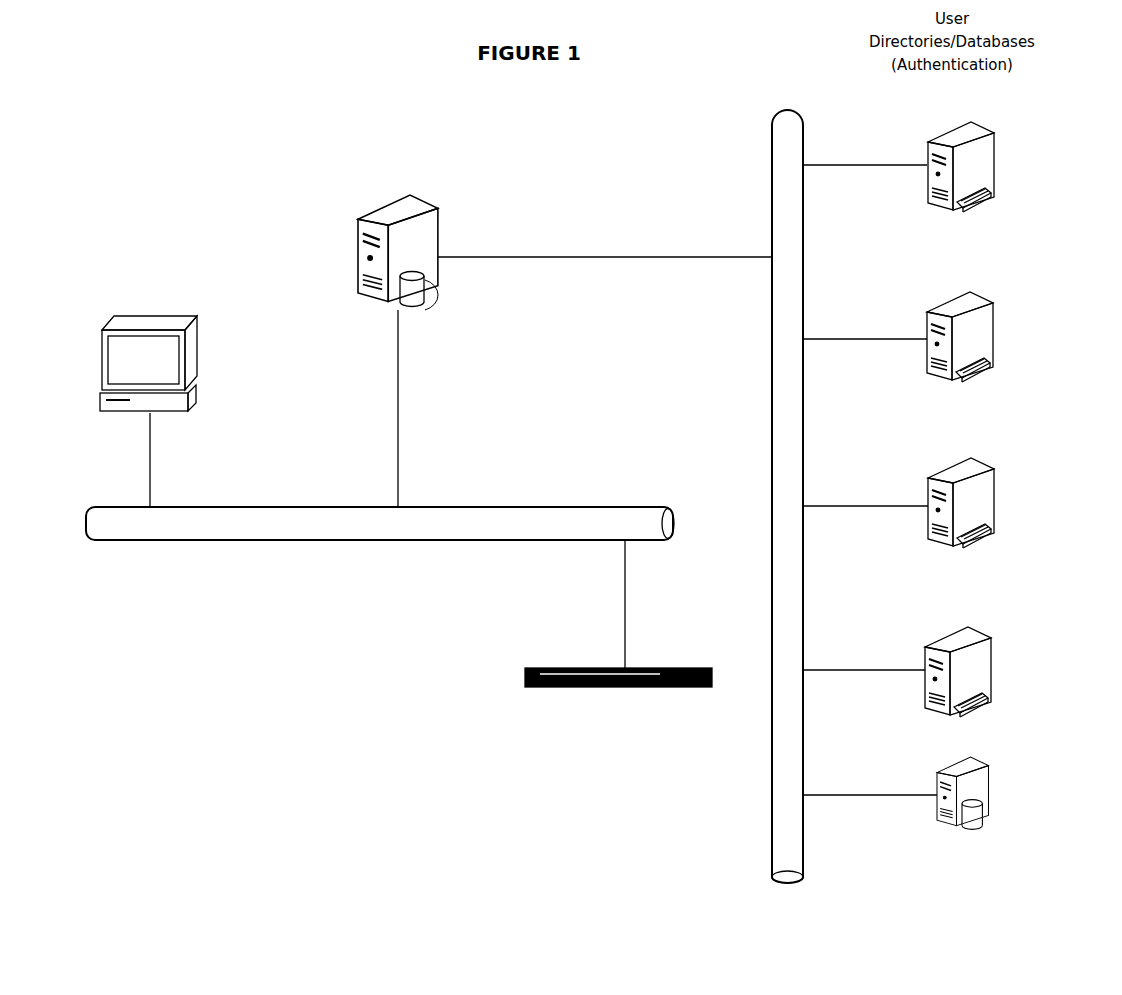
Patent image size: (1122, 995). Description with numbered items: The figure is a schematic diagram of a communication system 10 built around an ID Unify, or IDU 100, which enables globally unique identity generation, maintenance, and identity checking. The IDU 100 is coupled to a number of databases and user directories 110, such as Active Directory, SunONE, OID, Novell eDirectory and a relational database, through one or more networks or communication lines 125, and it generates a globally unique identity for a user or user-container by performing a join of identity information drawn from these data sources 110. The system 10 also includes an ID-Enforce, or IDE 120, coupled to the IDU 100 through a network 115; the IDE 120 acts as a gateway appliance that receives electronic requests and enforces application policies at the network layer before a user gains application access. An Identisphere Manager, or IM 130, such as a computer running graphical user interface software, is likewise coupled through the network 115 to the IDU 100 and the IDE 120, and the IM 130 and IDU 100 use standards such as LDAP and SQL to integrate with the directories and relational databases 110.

The communication system 10 is at (335, 700).
The ID Unify (IDU) 100 is at (386, 220).
The databases and/or user directories (DS) 110 is at (975, 166).
The network 115 is at (258, 525).
The ID-Enforce (IDE) 120 is at (610, 672).
The networks or communication lines 125 is at (790, 765).
The Identisphere Manager (IM) 130 is at (190, 383).